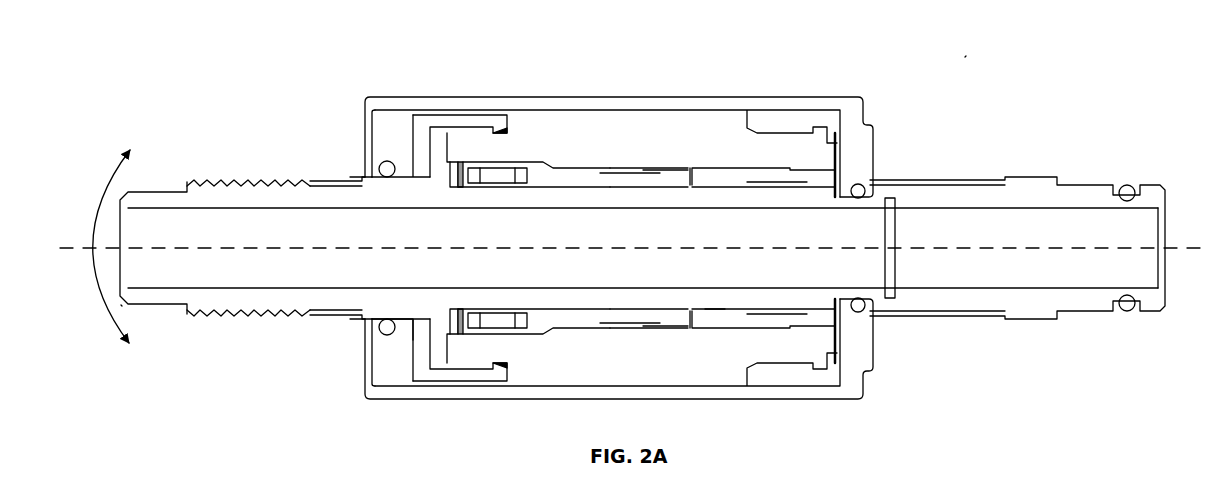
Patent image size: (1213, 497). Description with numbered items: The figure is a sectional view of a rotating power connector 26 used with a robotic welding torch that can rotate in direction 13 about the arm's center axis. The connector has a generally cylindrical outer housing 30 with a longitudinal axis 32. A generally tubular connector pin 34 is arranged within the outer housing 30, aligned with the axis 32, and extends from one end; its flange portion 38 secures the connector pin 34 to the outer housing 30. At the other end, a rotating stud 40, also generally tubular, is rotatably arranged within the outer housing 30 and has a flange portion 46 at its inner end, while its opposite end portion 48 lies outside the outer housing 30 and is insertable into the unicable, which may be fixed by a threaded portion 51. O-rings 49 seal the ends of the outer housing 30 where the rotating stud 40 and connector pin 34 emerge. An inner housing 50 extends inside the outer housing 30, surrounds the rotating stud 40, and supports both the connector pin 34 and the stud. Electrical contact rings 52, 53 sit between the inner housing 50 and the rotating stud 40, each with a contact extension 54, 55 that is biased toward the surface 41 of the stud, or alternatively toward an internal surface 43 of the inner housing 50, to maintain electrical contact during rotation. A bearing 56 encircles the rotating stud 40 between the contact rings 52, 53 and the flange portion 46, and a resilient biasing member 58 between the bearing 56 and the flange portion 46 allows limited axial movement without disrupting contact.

The rotating power connector 26 is at (968, 56).
The direction 13 is at (104, 192).
The outer housing 30 is at (840, 97).
The longitudinal axis 32 is at (170, 255).
The connector pin 34 is at (1057, 177).
The flange portion 38 is at (868, 375).
The rotating stud 40 is at (313, 181).
The surface 41 is at (717, 306).
The internal surface 43 is at (765, 334).
The flange portion 46 is at (432, 336).
The end portion 48 is at (124, 314).
The O-ring 49 is at (378, 160).
The inner housing 50 is at (717, 98).
The threaded portion 51 is at (251, 323).
The electrical contact ring 52 is at (613, 167).
The electrical contact ring 53 is at (718, 167).
The contact extension 54 is at (644, 318).
The contact extension 55 is at (749, 318).
The bearing 56 is at (507, 163).
The resilient biasing member 58 is at (463, 157).